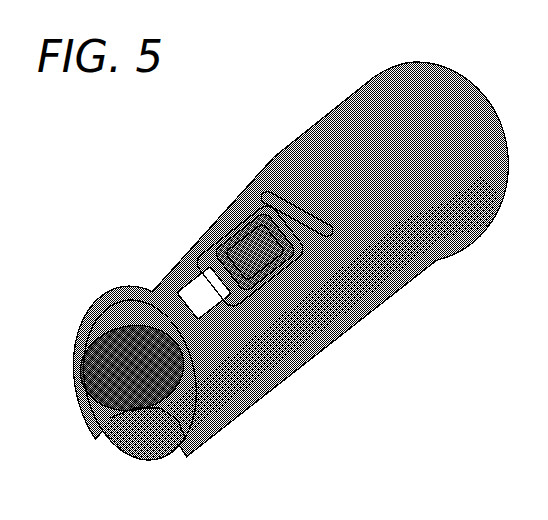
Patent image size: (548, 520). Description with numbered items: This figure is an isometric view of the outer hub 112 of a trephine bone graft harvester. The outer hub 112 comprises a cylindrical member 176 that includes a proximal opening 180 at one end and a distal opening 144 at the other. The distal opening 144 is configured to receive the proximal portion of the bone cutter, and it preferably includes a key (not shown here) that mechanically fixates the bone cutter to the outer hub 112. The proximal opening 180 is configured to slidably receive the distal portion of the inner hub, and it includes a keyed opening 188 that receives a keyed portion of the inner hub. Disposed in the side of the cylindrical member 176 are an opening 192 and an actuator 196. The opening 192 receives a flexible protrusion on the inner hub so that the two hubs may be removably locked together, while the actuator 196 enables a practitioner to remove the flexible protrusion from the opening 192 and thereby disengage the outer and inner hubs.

The outer hub 112 is at (389, 392).
The distal opening 144 is at (466, 80).
The cylindrical member 176 is at (388, 264).
The proximal opening 180 is at (112, 368).
The keyed opening 188 is at (165, 403).
The opening 192 is at (180, 280).
The actuator 196 is at (238, 230).